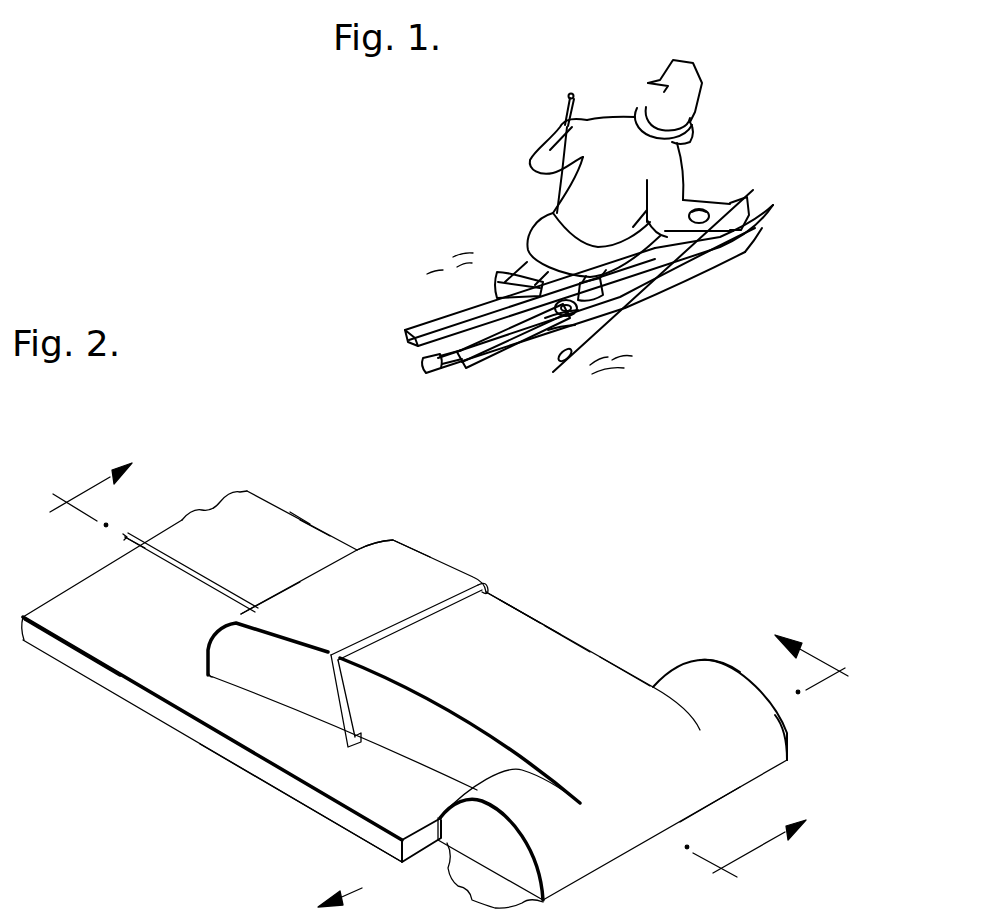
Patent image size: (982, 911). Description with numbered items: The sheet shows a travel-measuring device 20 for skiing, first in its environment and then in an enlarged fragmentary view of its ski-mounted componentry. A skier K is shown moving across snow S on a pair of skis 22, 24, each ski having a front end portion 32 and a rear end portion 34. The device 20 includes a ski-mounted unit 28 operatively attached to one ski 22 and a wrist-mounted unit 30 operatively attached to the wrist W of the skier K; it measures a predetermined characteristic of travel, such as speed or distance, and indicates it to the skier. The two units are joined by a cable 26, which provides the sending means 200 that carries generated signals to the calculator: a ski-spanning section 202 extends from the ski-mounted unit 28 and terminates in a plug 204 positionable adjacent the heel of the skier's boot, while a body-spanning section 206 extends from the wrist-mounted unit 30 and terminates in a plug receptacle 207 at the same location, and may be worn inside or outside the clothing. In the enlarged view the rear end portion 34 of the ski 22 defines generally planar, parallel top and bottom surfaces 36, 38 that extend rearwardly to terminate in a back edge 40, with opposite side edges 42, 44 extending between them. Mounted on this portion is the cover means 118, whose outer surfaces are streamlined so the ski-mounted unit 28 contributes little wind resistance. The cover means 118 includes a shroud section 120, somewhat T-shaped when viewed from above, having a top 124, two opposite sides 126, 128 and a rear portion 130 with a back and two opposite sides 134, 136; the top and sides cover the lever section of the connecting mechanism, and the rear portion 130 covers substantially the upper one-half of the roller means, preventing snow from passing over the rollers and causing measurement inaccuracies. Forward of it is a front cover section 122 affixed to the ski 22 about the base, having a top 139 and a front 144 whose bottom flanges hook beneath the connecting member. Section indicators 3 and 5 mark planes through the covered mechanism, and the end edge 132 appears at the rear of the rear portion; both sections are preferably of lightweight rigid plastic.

In FIG. 1, the skier K is at (604, 78).
In FIG. 1, the snow S is at (432, 280).
In FIG. 1, the wrist W is at (712, 205).
In FIG. 1, the device 20 is at (412, 352).
In FIG. 2, the device 20 is at (553, 565).
In FIG. 1, the ski 22 is at (718, 258).
In FIG. 2, the ski 22 is at (250, 489).
In FIG. 1, the ski 24 is at (438, 319).
In FIG. 1, the cable 26 is at (493, 357).
In FIG. 2, the cable 26 is at (140, 535).
In FIG. 1, the ski-mounted unit 28 is at (408, 373).
In FIG. 2, the ski-mounted unit 28 is at (645, 628).
In FIG. 1, the wrist-mounted unit 30 is at (701, 194).
In FIG. 1, the front end portion 32 is at (720, 248).
In FIG. 1, the sending means 200 is at (477, 357).
In FIG. 1, the ski-spanning section 202 is at (493, 327).
In FIG. 2, the ski-spanning section 202 is at (186, 580).
In FIG. 1, the plug 204 is at (549, 370).
In FIG. 1, the body-spanning section 206 is at (580, 312).
In FIG. 1, the plug receptacle 207 is at (575, 338).
In FIG. 2, the rear end portion 34 is at (305, 537).
In FIG. 2, the top surface 36 is at (125, 668).
In FIG. 2, the bottom surface 38 is at (326, 822).
In FIG. 2, the back edge 40 is at (417, 848).
In FIG. 2, the side edge 42 is at (76, 652).
In FIG. 2, the side edge 44 is at (294, 518).
In FIG. 2, the cover means 118 is at (457, 551).
In FIG. 2, the shroud section 120 is at (520, 630).
In FIG. 2, the front cover section 122 is at (400, 548).
In FIG. 2, the top 124 is at (557, 650).
In FIG. 2, the side 126 is at (438, 723).
In FIG. 2, the side 128 is at (625, 667).
In FIG. 2, the rear portion 130 is at (725, 670).
In FIG. 2, the end edge 132 is at (692, 813).
In FIG. 2, the side 134 is at (504, 842).
In FIG. 2, the side 136 is at (788, 737).
In FIG. 2, the top 139 is at (347, 578).
In FIG. 2, the front 144 is at (282, 600).
In FIG. 2, the section line 3 is at (417, 683).
In FIG. 2, the section line 5 is at (821, 664).